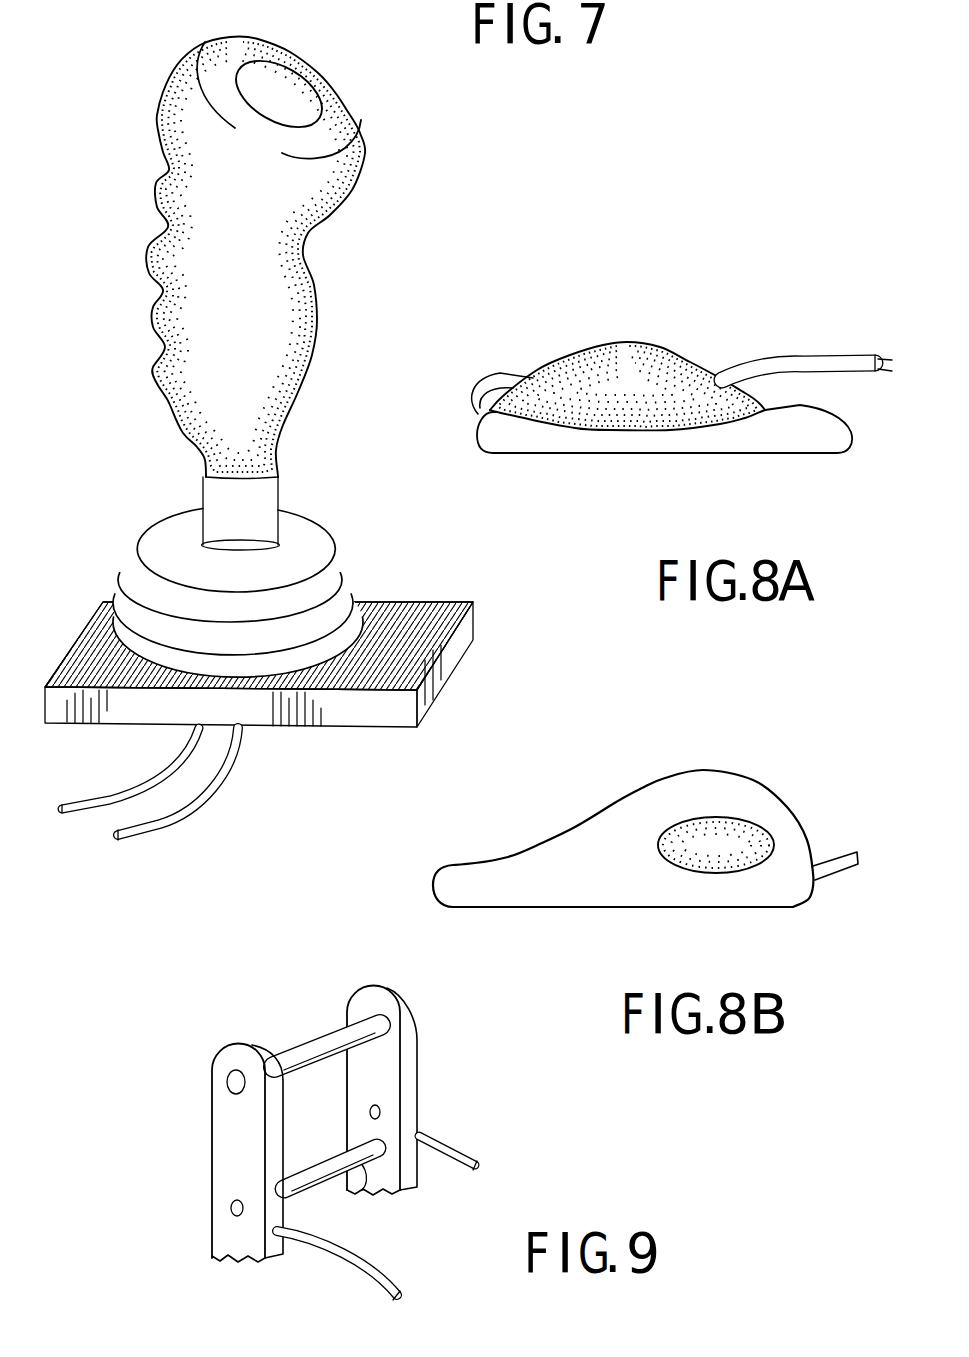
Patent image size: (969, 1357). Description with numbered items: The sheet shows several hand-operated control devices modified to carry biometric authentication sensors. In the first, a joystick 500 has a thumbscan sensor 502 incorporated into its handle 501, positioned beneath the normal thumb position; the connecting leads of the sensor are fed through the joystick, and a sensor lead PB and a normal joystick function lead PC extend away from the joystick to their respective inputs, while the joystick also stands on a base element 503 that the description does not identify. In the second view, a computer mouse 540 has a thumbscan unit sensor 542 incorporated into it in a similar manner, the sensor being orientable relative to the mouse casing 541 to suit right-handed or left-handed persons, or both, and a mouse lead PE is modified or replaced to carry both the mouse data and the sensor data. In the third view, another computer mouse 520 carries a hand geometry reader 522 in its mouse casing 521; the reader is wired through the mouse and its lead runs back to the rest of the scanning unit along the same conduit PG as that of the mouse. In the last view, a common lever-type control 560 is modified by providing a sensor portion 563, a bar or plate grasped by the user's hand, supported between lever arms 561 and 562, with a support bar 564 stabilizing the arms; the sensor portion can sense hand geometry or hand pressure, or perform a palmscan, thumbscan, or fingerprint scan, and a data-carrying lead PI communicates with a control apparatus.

In FIG. 7, the joystick 500 is at (128, 284).
In FIG. 7, the handle 501 is at (330, 128).
In FIG. 7, the thumbscan sensor 502 is at (283, 90).
In FIG. 7, the base plate 503 is at (407, 615).
In FIG. 7, the sensor lead PB is at (118, 794).
In FIG. 7, the joystick function lead PC is at (220, 752).
In FIG. 8A, the computer mouse 540 is at (568, 468).
In FIG. 8A, the mouse casing 541 is at (655, 450).
In FIG. 8A, the thumbscan unit sensor 542 is at (710, 423).
In FIG. 8A, the conduit PG is at (808, 360).
In FIG. 8B, the computer mouse 520 is at (810, 718).
In FIG. 8B, the mouse casing 521 is at (607, 818).
In FIG. 8B, the hand geometry reader 522 is at (718, 855).
In FIG. 8B, the mouse lead PE is at (843, 873).
In FIG. 9, the lever-type control 560 is at (183, 1195).
In FIG. 9, the lever arm 561 is at (353, 1007).
In FIG. 9, the lever arm 562 is at (217, 1088).
In FIG. 9, the sensor portion 563 is at (420, 1052).
In FIG. 9, the support bar 564 is at (360, 1193).
In FIG. 9, the data-carrying lead PI is at (353, 1257).